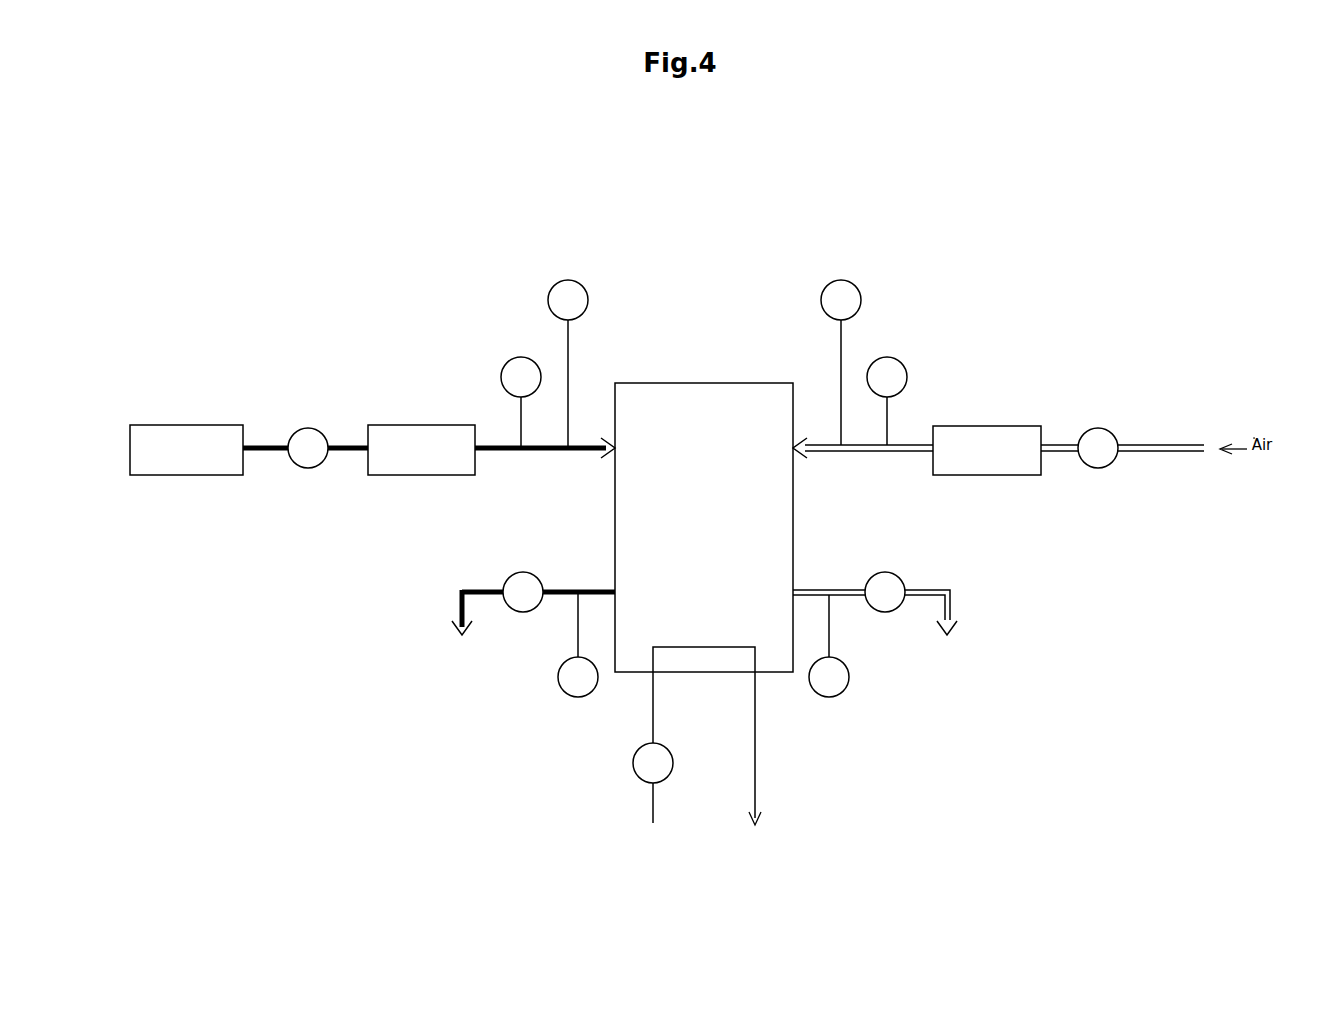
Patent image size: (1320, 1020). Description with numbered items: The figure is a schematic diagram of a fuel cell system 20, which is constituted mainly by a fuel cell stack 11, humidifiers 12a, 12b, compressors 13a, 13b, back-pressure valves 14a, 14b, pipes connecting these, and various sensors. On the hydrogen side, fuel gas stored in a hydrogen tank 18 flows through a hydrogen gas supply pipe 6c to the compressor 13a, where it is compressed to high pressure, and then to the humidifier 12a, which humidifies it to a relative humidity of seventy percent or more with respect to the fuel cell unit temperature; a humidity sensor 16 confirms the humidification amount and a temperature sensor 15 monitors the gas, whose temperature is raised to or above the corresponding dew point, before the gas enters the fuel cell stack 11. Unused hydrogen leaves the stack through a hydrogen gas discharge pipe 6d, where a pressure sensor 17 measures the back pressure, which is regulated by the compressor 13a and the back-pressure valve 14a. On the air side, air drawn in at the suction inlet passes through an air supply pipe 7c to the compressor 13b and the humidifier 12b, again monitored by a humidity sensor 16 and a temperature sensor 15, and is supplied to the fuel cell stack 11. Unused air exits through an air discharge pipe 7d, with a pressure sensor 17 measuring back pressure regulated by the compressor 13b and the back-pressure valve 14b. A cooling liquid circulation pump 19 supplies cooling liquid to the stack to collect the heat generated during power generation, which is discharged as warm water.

The fuel cell system 20 is at (677, 234).
The fuel cell stack 11 is at (700, 383).
The hydrogen tank 18 is at (189, 476).
The hydrogen gas supply pipe 6c is at (272, 451).
The compressor 13a is at (312, 428).
The humidifier 12a is at (425, 476).
The humidity sensor 16 is at (505, 365).
The temperature sensor 15 is at (584, 287).
The air supply pipe 7c is at (872, 454).
The humidifier 12b is at (1003, 476).
The compressor 13b is at (1115, 432).
The hydrogen gas discharge pipe 6d is at (584, 588).
The back-pressure valve 14a is at (506, 578).
The air discharge pipe 7d is at (825, 588).
The back-pressure valve 14b is at (901, 578).
The pressure sensor 17 is at (564, 693).
The cooling liquid circulation pump 19 is at (672, 758).